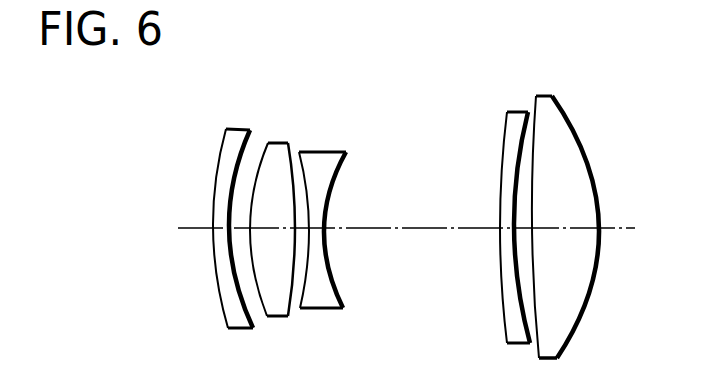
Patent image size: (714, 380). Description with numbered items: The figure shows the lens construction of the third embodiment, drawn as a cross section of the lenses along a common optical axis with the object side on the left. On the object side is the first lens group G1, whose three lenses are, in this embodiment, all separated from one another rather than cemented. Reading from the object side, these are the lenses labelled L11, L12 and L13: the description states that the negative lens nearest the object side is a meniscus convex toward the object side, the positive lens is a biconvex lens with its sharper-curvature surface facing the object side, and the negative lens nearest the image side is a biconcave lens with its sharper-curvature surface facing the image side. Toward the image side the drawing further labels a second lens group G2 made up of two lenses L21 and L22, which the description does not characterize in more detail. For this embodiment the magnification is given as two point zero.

The first lens group G1 is at (343, 55).
The first lens of first group (negative meniscus) L11 is at (236, 128).
The second lens of first group (biconvex) L12 is at (277, 142).
The third lens of first group (biconcave) L13 is at (321, 151).
The second lens group G2 is at (573, 38).
The first lens of second group (meniscus) L21 is at (513, 111).
The second lens of second group (convex) L22 is at (545, 96).